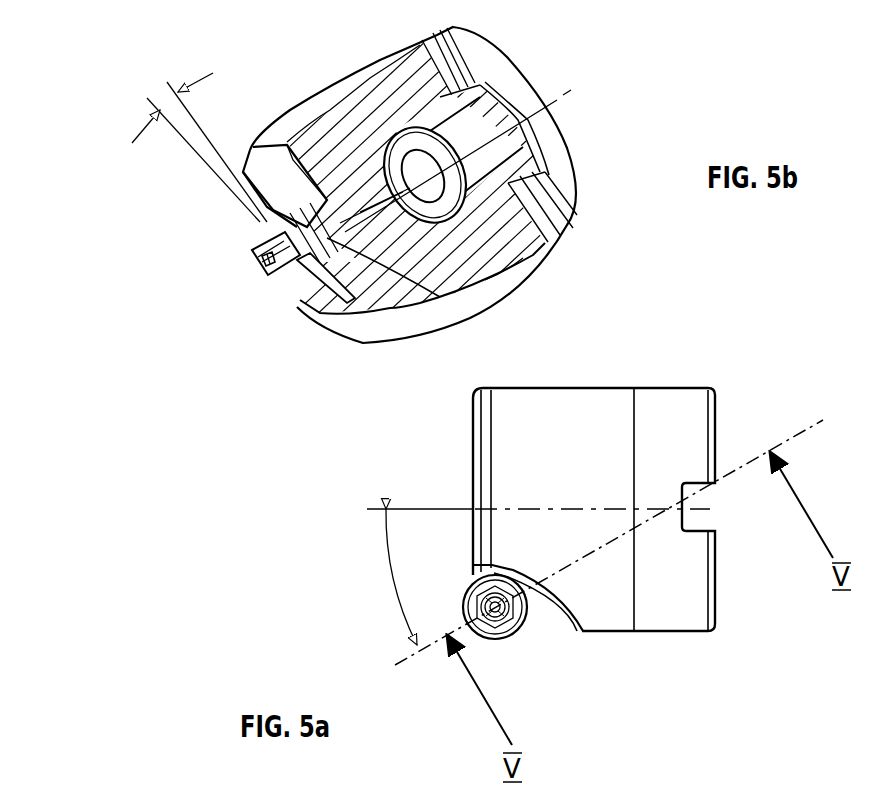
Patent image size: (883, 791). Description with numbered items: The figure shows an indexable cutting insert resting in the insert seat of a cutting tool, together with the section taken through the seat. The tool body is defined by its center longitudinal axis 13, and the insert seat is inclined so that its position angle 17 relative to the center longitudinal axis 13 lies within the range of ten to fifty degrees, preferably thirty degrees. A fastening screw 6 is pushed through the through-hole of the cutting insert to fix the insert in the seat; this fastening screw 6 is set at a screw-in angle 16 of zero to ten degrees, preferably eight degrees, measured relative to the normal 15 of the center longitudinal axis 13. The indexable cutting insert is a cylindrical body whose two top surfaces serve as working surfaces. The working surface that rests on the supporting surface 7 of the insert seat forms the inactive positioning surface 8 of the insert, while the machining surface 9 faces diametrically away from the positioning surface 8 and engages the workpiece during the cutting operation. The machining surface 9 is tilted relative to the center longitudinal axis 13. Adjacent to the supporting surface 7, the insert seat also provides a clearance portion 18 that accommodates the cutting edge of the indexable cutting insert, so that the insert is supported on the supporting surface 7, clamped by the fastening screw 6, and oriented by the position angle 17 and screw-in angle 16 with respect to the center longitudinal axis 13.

In FIG. 5A, the fastening screw 6 is at (518, 630).
In FIG. 5B, the supporting surface 7 is at (257, 270).
In FIG. 5B, the positioning surface 8 is at (292, 285).
In FIG. 5B, the machining surface 9 is at (262, 256).
In FIG. 5A, the center longitudinal axis 13 is at (552, 503).
In FIG. 5B, the center longitudinal axis 13 is at (553, 97).
In FIG. 5B, the normal 15 is at (205, 130).
In FIG. 5B, the screw-in angle 16 is at (167, 100).
In FIG. 5A, the position angle 17 is at (390, 584).
In FIG. 5B, the clearance portion 18 is at (330, 233).